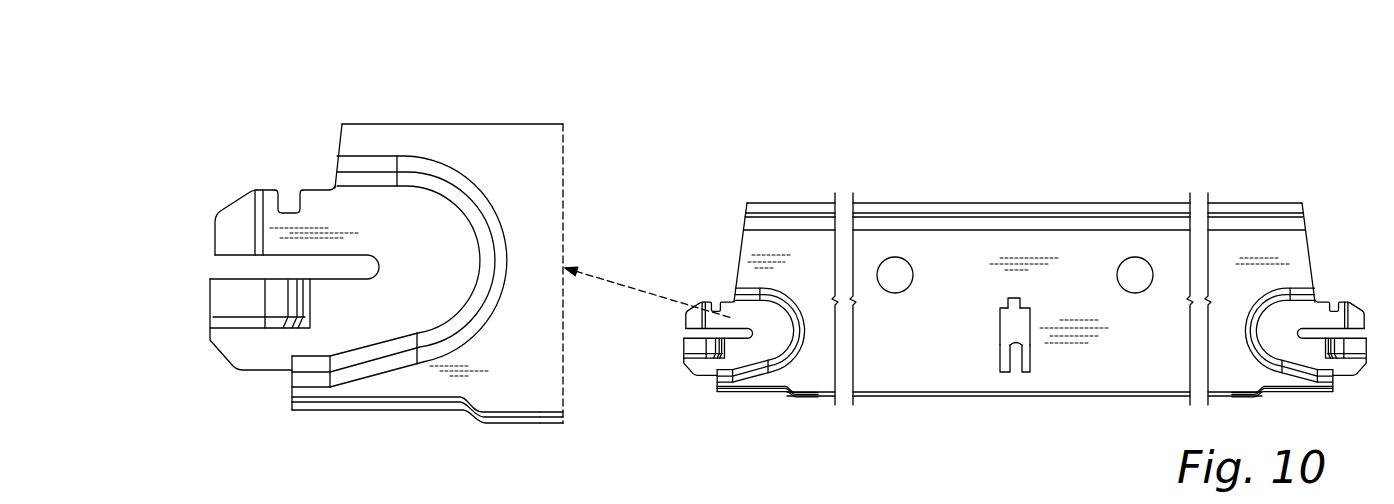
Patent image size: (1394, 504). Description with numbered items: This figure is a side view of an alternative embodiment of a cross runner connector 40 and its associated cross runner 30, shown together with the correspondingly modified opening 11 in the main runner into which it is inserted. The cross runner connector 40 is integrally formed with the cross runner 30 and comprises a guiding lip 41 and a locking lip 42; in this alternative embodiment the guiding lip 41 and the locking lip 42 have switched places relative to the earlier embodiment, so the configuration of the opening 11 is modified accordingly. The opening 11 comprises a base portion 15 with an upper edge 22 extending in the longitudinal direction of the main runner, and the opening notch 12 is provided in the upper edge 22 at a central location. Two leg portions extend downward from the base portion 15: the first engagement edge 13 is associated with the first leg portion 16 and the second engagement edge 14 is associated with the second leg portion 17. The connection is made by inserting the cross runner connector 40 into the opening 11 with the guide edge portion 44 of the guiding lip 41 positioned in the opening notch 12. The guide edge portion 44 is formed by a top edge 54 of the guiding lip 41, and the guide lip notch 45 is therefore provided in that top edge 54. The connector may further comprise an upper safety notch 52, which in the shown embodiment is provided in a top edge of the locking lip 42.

The opening 11 is at (1032, 333).
The opening notch 12 is at (1012, 298).
The first engagement edge 13 is at (1000, 357).
The second engagement edge 14 is at (1032, 352).
The base portion 15 is at (998, 320).
The first leg portion 16 is at (997, 367).
The second leg portion 17 is at (1033, 364).
The upper edge 22 is at (999, 317).
The cross runner 30 is at (1098, 248).
The cross runner connector 40 is at (205, 190).
The guiding lip 41 is at (232, 232).
The locking lip 42 is at (245, 347).
The guide edge portion 44 is at (266, 178).
The guide lip notch 45 is at (342, 131).
The safety notch 52 is at (289, 188).
The top edge 54 is at (308, 188).